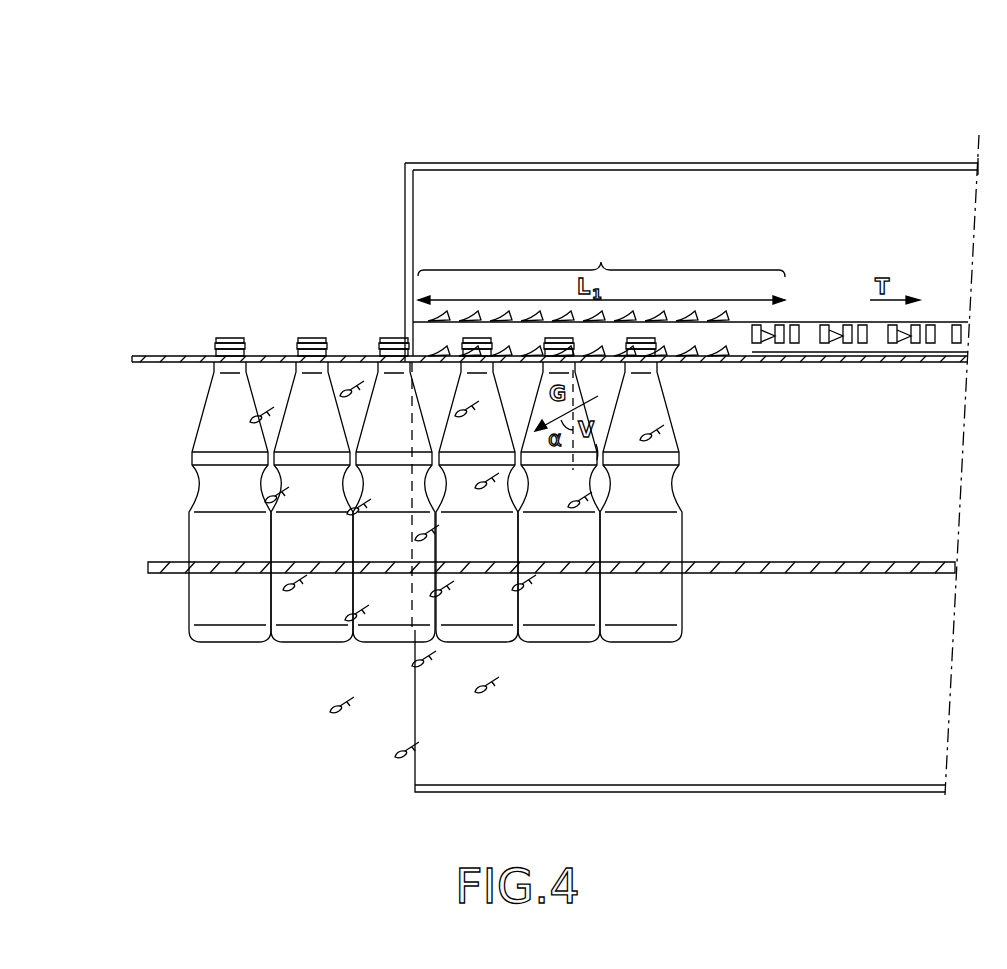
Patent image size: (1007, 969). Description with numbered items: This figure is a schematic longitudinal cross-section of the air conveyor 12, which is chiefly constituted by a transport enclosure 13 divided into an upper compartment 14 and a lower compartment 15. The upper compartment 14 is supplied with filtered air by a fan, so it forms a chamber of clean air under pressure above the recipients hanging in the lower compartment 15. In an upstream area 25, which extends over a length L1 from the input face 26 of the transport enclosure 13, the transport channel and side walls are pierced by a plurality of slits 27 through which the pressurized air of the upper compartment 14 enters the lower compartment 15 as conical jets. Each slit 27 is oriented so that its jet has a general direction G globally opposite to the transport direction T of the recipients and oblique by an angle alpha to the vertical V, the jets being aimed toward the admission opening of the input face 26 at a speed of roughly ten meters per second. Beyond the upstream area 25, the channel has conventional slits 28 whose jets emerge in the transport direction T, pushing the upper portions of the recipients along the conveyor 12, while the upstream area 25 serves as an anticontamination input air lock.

The air conveyor 12 is at (885, 146).
The transport enclosure 13 is at (507, 163).
The upper compartment 14 is at (843, 218).
The lower compartment 15 is at (753, 488).
The upstream area 25 is at (601, 257).
The input face 26 is at (413, 714).
The slits 27 is at (715, 312).
The conventional slits 28 is at (845, 330).